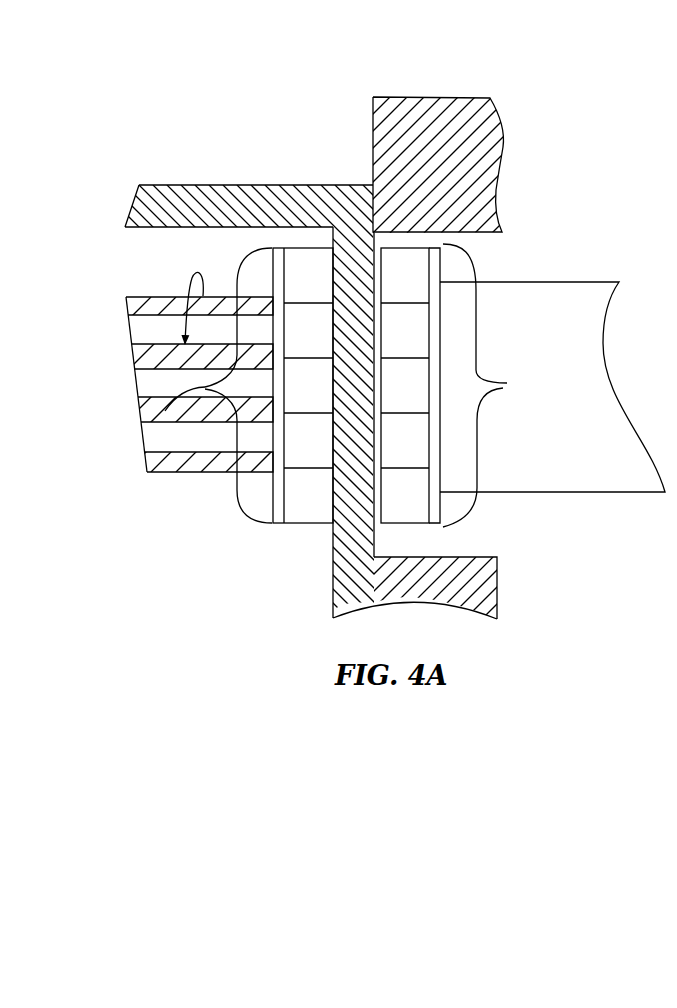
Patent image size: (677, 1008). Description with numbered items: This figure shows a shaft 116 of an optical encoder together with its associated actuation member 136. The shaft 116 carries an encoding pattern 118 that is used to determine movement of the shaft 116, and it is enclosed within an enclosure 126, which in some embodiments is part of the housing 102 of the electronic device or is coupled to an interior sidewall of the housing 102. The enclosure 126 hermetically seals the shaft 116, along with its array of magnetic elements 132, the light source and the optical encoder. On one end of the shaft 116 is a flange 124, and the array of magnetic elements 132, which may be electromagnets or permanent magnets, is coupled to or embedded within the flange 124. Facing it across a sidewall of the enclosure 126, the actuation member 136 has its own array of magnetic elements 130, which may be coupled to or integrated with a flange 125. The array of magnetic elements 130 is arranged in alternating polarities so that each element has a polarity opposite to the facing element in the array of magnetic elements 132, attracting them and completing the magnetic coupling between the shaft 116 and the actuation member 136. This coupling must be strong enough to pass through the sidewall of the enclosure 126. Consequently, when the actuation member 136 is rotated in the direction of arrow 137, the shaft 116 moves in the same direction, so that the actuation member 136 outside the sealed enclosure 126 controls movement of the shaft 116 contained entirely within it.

The housing 102 is at (490, 98).
The shaft 116 is at (147, 326).
The encoding pattern 118 is at (124, 380).
The flange 124 is at (278, 525).
The flange 125 is at (445, 522).
The enclosure 126 is at (235, 185).
The array of magnetic elements 130 is at (461, 385).
The array of magnetic elements 132 is at (142, 422).
The actuation member 136 is at (553, 282).
The arrow 137 is at (505, 332).